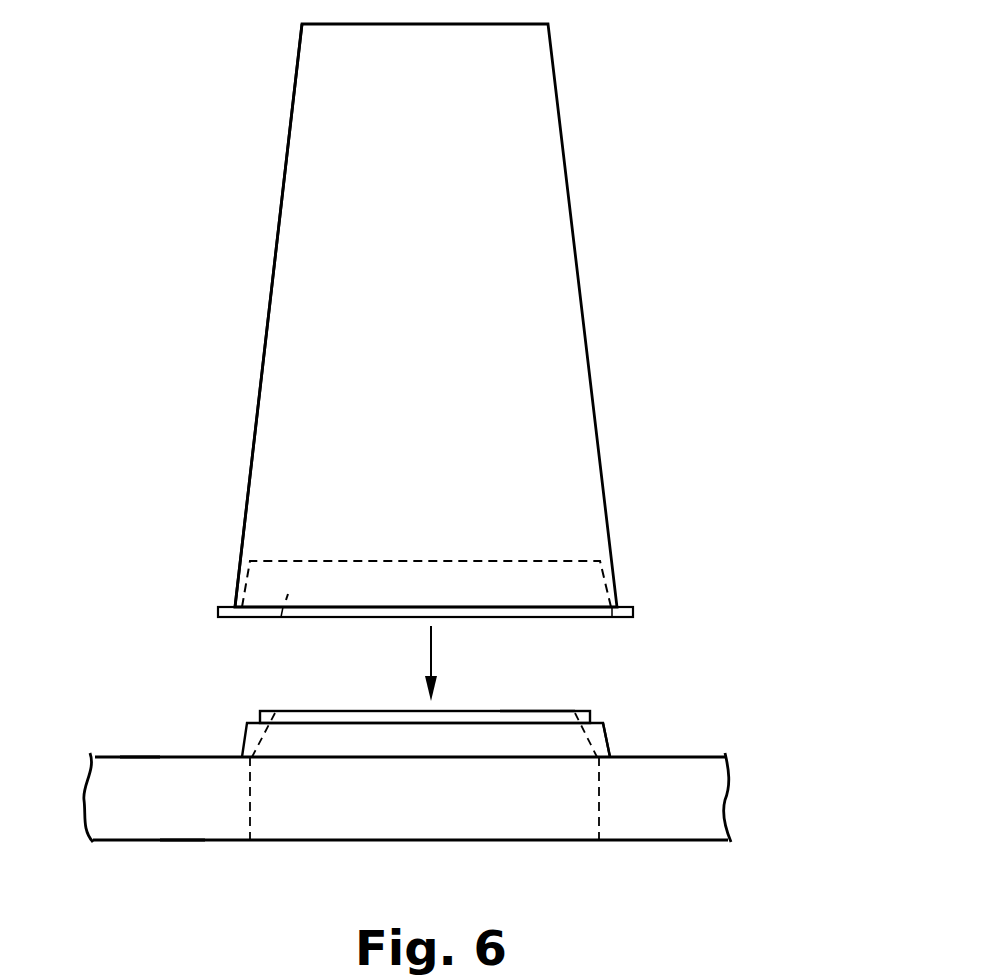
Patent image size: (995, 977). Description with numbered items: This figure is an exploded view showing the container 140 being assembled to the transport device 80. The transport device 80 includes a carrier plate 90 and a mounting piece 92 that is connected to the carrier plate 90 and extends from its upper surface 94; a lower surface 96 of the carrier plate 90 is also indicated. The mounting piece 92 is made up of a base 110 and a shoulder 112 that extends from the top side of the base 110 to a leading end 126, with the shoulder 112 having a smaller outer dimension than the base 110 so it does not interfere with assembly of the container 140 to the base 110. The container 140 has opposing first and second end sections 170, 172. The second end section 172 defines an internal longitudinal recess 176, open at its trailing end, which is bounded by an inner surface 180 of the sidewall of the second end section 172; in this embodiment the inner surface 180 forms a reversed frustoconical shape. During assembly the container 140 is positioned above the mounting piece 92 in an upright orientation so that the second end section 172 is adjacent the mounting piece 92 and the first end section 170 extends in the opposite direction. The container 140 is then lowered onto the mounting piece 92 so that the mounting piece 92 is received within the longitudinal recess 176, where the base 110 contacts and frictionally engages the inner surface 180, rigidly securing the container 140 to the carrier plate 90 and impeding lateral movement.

The transport device 80 is at (98, 862).
The carrier plate 90 is at (656, 856).
The mounting piece 92 is at (630, 730).
The upper surface 94 is at (133, 757).
The bottom surface of base 96 is at (183, 840).
The base 110 is at (243, 740).
The shoulder 112 is at (263, 718).
The leading end 126 is at (538, 710).
The container 140 is at (622, 210).
The first end section 170 is at (252, 138).
The second end section 172 is at (210, 568).
The longitudinal recess 176 is at (282, 617).
The inner surface 180 is at (600, 583).